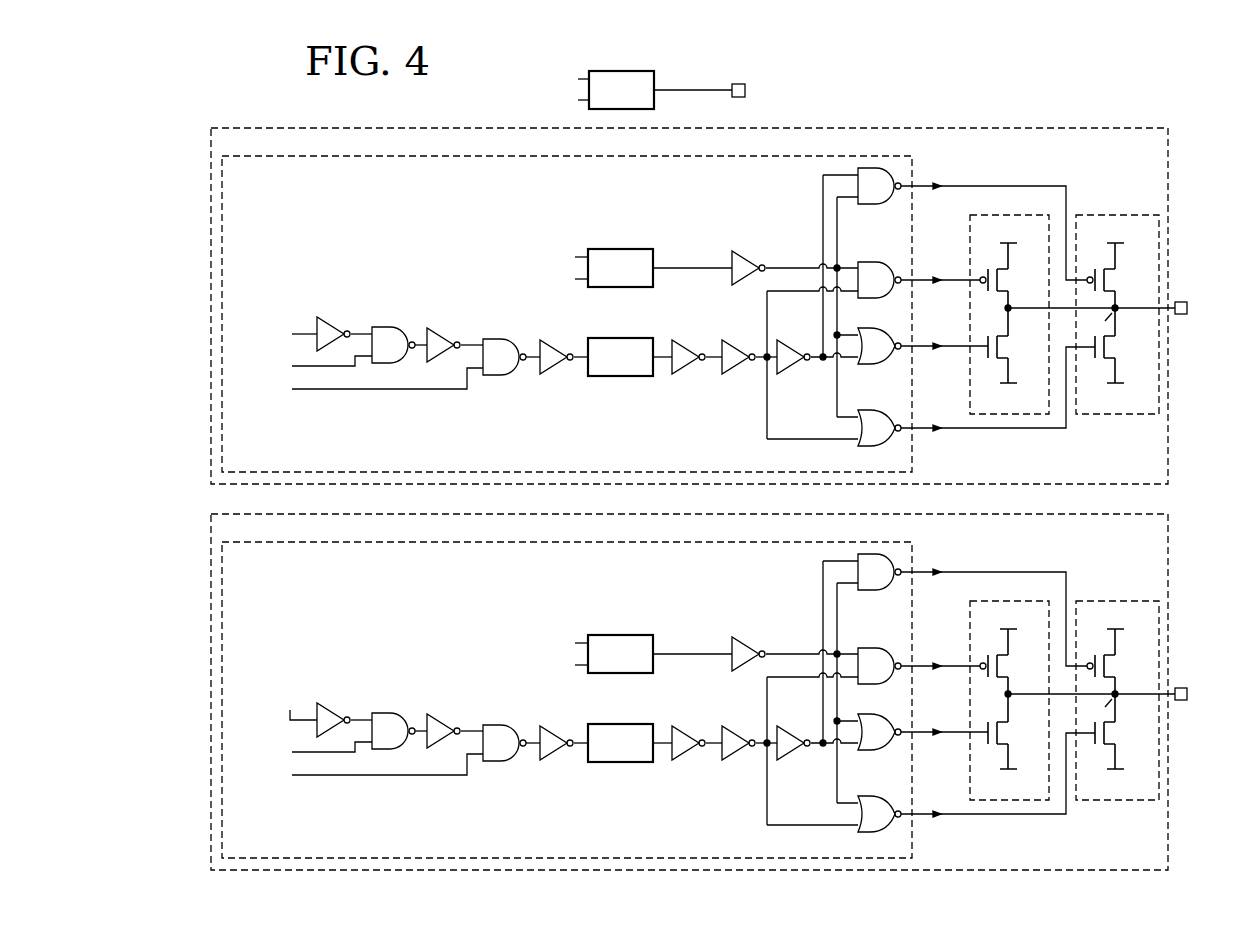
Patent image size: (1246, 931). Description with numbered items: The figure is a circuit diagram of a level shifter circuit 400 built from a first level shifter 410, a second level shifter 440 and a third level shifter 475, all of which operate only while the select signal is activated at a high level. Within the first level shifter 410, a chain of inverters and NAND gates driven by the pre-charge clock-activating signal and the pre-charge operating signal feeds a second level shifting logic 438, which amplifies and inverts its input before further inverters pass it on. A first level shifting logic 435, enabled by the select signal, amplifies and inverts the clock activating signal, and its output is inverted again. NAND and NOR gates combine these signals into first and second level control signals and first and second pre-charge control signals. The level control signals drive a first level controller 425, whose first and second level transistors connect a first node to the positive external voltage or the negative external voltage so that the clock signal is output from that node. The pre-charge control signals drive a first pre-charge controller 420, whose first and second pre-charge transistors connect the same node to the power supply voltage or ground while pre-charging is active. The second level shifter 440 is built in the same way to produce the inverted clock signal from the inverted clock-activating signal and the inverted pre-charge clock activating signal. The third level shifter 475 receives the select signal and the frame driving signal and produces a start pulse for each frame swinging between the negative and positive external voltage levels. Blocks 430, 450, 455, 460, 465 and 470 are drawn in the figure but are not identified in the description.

The level shifter circuit 400 is at (1150, 104).
The first level shifter 410 is at (680, 128).
The first pre-charge controller 420 is at (1108, 216).
The first level controller 425 is at (1012, 216).
The first control signal generating unit 430 is at (575, 158).
The first level shifting logic 435 is at (622, 250).
The second level shifting logic 438 is at (721, 681).
The second level shifter 440 is at (622, 338).
The third output unit (PTR3, PTR4) 450 is at (1117, 691).
The fourth output unit (TR3, TR4) 455 is at (1013, 691).
The second control signal generating unit 460 is at (567, 689).
The third level shifter LS3 465 is at (627, 644).
The fourth level shifter LS4 470 is at (627, 733).
The third level shifter 475 is at (625, 72).